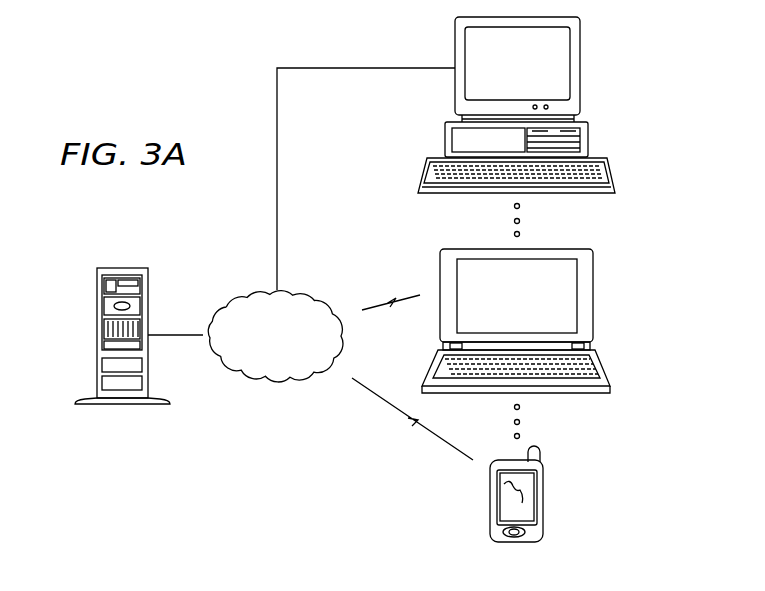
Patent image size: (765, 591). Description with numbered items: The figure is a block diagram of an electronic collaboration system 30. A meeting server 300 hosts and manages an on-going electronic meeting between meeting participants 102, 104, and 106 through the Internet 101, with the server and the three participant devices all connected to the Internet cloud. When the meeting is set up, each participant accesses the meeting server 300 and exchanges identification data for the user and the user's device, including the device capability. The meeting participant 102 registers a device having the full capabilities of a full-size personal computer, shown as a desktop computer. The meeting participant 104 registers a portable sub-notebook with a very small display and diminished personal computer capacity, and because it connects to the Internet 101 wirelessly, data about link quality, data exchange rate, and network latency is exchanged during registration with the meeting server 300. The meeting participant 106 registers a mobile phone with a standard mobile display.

The electronic collaboration system 30 is at (668, 122).
The meeting participant 102 is at (580, 60).
The meeting participant 104 is at (593, 305).
The meeting participant 106 is at (543, 505).
The Internet 101 is at (245, 378).
The meeting server 300 is at (97, 345).